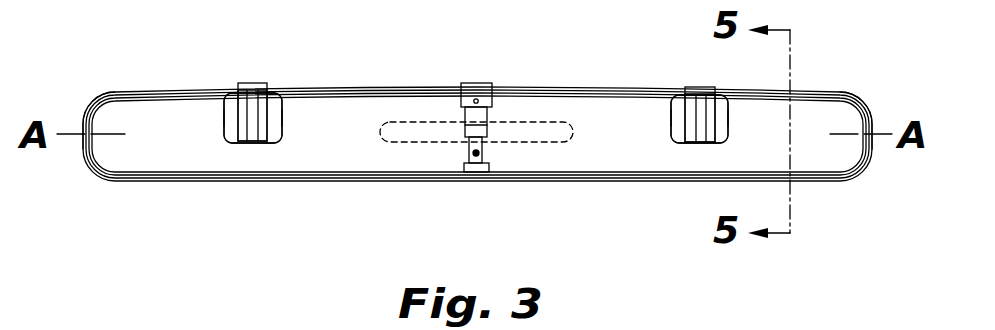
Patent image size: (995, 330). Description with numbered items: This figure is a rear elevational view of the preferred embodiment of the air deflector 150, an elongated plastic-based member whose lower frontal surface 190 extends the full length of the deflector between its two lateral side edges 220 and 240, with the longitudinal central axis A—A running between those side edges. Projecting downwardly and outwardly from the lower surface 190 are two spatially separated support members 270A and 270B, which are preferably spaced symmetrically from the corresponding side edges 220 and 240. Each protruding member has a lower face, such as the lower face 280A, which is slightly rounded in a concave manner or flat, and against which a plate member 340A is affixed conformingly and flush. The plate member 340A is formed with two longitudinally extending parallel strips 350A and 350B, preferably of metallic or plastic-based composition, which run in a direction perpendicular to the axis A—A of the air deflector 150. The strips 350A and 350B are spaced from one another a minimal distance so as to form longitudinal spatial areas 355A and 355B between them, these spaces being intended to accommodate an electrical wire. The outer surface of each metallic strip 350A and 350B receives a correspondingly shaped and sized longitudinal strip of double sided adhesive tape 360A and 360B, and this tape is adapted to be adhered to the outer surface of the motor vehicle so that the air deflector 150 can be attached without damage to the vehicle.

The air deflector 150 is at (414, 90).
The lower frontal surface 190 is at (508, 99).
The side edge 220 is at (88, 160).
The side edge 240 is at (862, 165).
The support member 270A is at (236, 118).
The support member 270B is at (687, 116).
The lower face 280A is at (273, 108).
The plate member 340A is at (240, 105).
The metallic strip 350A is at (231, 143).
The metallic strip 350B is at (263, 123).
The longitudinal spatial area 355A is at (249, 141).
The longitudinal spatial area 355B is at (697, 142).
The double sided adhesive tape 360A is at (241, 122).
The double sided adhesive tape 360B is at (268, 123).